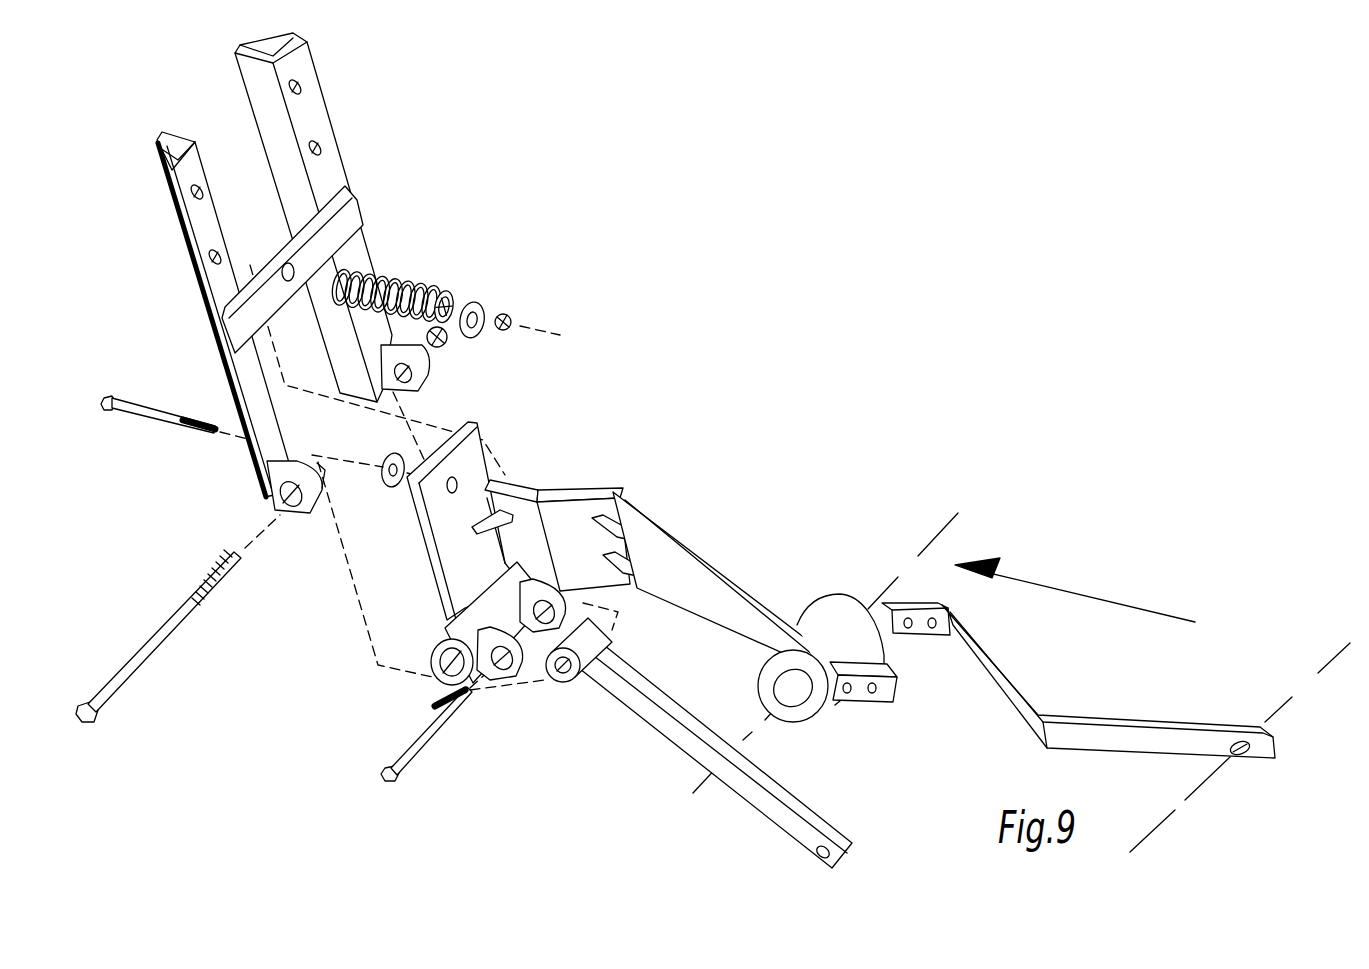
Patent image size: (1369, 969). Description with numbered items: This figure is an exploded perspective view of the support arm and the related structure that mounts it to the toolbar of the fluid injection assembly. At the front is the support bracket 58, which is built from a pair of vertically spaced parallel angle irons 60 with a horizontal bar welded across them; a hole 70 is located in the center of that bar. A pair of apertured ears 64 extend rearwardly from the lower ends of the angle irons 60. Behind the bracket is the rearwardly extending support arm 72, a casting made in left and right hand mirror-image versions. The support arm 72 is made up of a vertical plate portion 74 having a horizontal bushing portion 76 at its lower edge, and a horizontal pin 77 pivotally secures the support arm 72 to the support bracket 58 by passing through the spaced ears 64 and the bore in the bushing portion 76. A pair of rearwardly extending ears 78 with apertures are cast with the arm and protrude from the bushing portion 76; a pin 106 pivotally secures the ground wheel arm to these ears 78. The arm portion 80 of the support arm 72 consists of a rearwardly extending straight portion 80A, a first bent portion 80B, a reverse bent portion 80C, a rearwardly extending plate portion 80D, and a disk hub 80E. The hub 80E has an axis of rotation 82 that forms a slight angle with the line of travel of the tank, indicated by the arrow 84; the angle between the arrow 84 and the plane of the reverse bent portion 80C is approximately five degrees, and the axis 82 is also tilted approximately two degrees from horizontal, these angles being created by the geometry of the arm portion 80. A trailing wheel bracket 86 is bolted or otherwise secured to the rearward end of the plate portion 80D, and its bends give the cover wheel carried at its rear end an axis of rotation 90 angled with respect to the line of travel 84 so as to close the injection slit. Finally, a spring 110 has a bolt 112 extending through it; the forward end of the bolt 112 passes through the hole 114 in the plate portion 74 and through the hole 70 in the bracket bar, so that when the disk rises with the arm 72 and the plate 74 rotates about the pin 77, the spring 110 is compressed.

The support bracket 58 is at (294, 377).
The angle irons 60 is at (327, 152).
The apertured ears 64 is at (421, 372).
The hole 70 is at (285, 252).
The support arm 72 is at (654, 616).
The vertical plate portion 74 is at (450, 504).
The horizontal bushing portion 76 is at (490, 592).
The horizontal pin 77 is at (140, 672).
The rearwardly extending ears 78 is at (565, 585).
The arm portion 80 is at (701, 594).
The rearwardly extending straight portion 80A is at (524, 484).
The first bent portion 80B is at (600, 484).
The reverse bent portion 80C is at (680, 538).
The rearwardly extending plate portion 80D is at (885, 704).
The disk hub 80E is at (827, 603).
The axis of rotation 82 is at (908, 565).
The arrow 84 is at (1036, 578).
The trailing wheel bracket 86 is at (993, 652).
The axis of rotation 90 is at (1305, 680).
The pin 106 is at (420, 768).
The spring 110 is at (438, 284).
The bolt 112 is at (161, 420).
The hole 114 is at (452, 497).